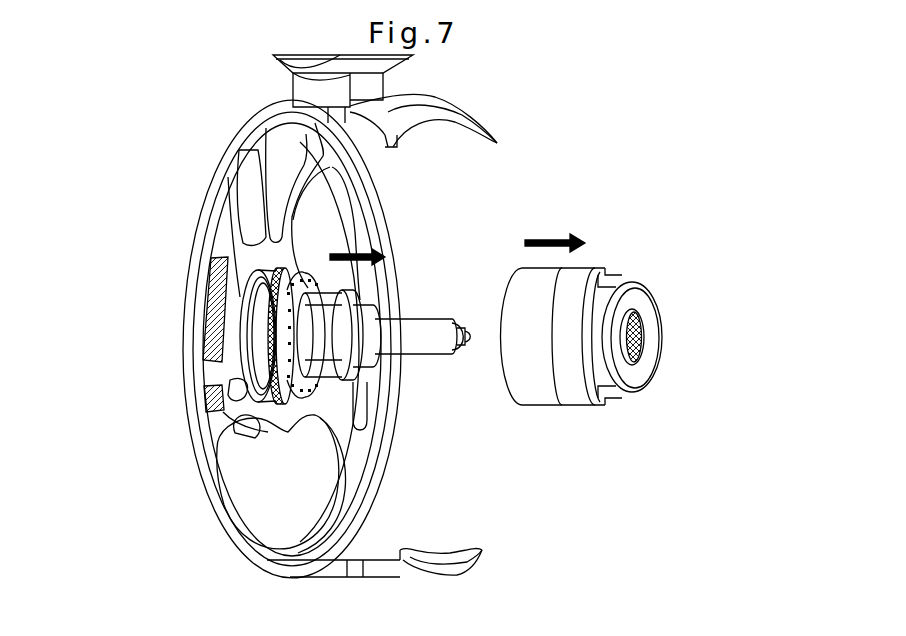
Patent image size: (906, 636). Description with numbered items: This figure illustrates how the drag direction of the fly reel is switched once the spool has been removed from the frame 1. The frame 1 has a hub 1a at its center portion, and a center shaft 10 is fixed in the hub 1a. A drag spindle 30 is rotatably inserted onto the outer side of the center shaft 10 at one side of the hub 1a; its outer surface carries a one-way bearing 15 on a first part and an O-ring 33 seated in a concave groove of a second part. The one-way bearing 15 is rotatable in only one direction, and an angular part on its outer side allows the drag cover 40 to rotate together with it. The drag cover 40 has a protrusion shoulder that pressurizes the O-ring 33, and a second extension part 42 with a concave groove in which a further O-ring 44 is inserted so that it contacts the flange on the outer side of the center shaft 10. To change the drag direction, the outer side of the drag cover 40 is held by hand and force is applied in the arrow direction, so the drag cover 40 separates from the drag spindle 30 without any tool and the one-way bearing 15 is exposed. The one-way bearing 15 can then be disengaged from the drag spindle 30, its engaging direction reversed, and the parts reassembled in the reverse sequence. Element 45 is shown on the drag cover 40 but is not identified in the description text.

The frame 1 is at (200, 243).
The hub 1a is at (243, 358).
The center shaft 10 is at (428, 340).
The one-way bearing 15 is at (321, 337).
The drag spindle 30 is at (237, 420).
The O-ring 33 is at (290, 425).
The drag cover 40 is at (577, 287).
The second extension part 42 is at (643, 347).
The O-ring 44 is at (637, 316).
The stepped flange 45 is at (608, 390).